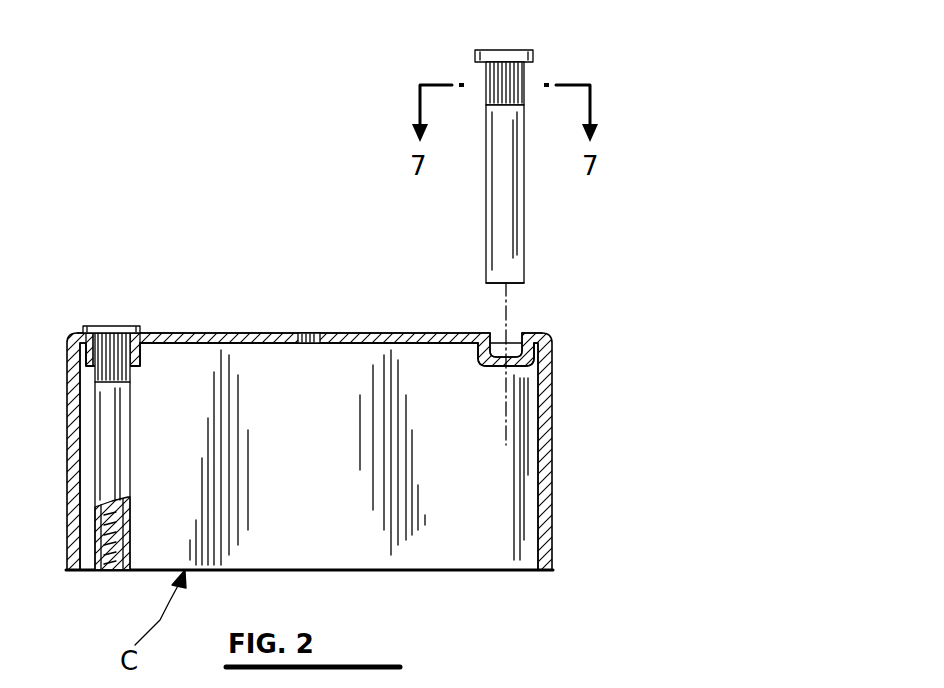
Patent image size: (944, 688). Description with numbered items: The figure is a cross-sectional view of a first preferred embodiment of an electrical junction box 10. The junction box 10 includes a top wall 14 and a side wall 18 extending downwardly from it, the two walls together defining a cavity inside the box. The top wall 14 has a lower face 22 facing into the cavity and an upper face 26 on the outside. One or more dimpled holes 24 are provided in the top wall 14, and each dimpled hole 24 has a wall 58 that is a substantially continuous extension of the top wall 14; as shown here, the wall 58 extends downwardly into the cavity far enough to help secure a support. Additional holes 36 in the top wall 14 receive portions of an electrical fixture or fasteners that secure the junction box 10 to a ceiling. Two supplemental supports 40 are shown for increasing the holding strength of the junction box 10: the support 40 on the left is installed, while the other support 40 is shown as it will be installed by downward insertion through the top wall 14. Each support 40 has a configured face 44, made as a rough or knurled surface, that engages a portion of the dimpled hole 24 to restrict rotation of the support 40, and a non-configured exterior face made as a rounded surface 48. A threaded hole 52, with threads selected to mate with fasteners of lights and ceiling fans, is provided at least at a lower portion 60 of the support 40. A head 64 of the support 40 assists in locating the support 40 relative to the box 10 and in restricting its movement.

The junction box 10 is at (105, 286).
The top wall 14 is at (355, 333).
The side wall 18 is at (553, 405).
The lower face 22 is at (168, 345).
The dimpled hole 24 is at (488, 373).
The upper face 26 is at (229, 333).
The additional hole 36 is at (316, 344).
The supplemental support 40 is at (505, 152).
The configured face 44 is at (490, 79).
The rounded surface 48 is at (486, 240).
The threaded hole 52 is at (108, 571).
The wall of dimpled hole 58 is at (478, 350).
The lower portion 60 is at (526, 270).
The head 64 is at (528, 50).